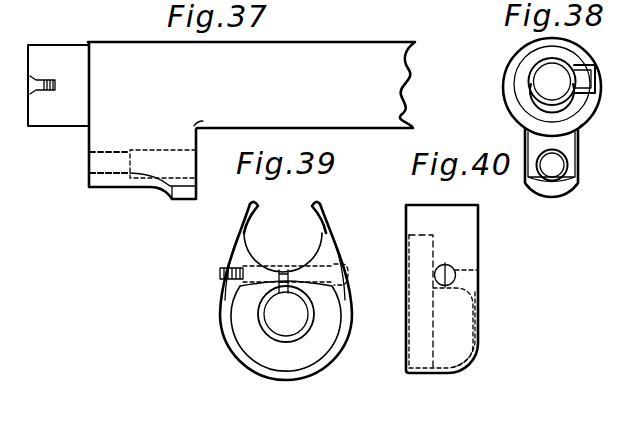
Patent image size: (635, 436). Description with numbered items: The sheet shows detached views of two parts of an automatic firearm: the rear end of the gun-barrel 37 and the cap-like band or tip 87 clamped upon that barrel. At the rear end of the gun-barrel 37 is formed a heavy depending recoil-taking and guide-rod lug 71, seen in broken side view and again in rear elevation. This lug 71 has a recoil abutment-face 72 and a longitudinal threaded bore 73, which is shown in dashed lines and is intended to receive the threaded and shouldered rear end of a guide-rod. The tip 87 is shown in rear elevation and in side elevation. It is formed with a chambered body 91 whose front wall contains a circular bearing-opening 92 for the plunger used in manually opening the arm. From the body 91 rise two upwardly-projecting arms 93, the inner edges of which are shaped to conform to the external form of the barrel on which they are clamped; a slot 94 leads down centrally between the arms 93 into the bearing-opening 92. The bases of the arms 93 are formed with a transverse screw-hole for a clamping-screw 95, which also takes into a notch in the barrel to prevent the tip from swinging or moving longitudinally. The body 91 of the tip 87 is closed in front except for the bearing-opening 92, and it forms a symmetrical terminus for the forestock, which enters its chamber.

In FIG. 37, the gun-barrel 37 is at (221, 120).
In FIG. 38, the gun-barrel 37 is at (521, 60).
In FIG. 37, the recoil-taking and guide-rod lug 71 is at (107, 160).
In FIG. 38, the recoil-taking and guide-rod lug 71 is at (558, 180).
In FIG. 37, the recoil abutment-face 72 is at (197, 169).
In FIG. 38, the recoil abutment-face 72 is at (572, 152).
In FIG. 37, the threaded bore 73 is at (112, 176).
In FIG. 40, the cap-like band or tip 87 is at (483, 313).
In FIG. 39, the chambered body 91 is at (272, 353).
In FIG. 40, the chambered body 91 is at (479, 356).
In FIG. 39, the bearing-opening 92 is at (278, 308).
In FIG. 40, the bearing-opening 92 is at (483, 331).
In FIG. 39, the arms 93 is at (347, 218).
In FIG. 40, the arms 93 is at (434, 289).
In FIG. 39, the slot 94 is at (284, 269).
In FIG. 39, the clamping-screw 95 is at (349, 272).